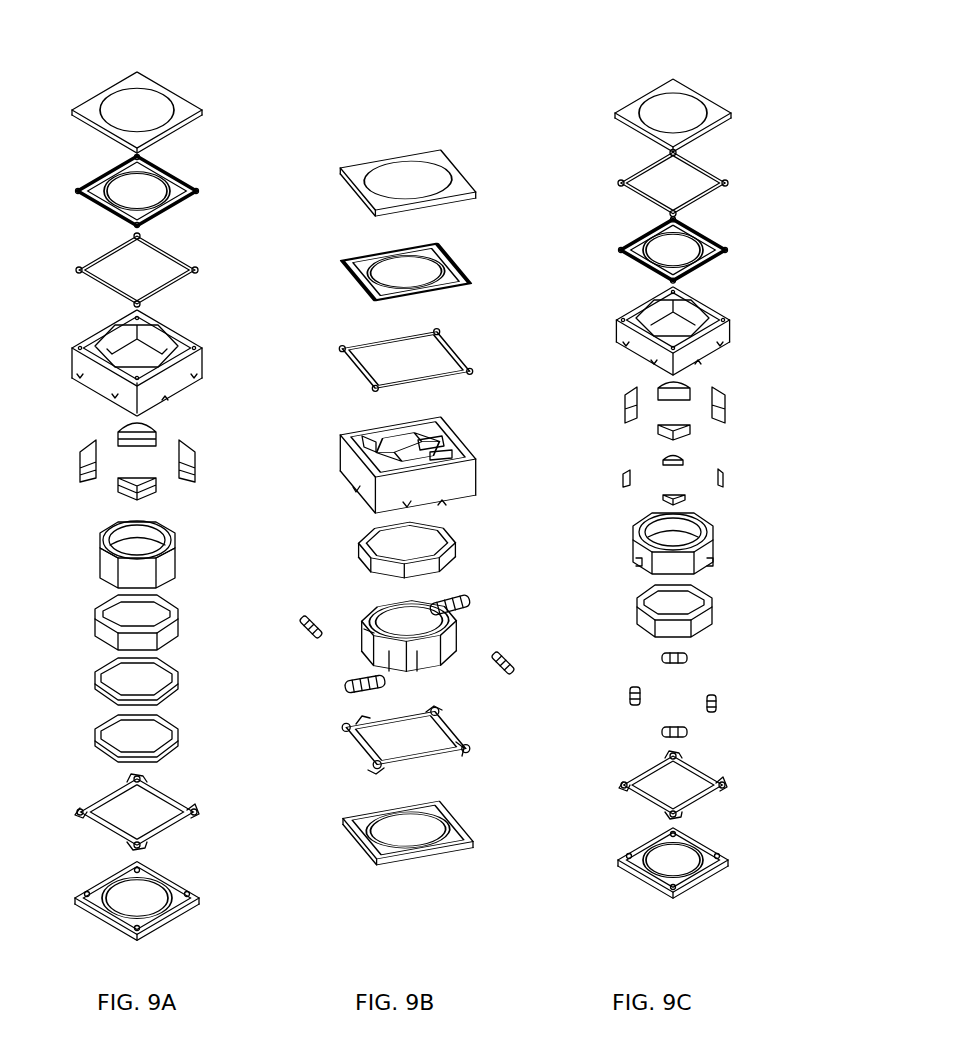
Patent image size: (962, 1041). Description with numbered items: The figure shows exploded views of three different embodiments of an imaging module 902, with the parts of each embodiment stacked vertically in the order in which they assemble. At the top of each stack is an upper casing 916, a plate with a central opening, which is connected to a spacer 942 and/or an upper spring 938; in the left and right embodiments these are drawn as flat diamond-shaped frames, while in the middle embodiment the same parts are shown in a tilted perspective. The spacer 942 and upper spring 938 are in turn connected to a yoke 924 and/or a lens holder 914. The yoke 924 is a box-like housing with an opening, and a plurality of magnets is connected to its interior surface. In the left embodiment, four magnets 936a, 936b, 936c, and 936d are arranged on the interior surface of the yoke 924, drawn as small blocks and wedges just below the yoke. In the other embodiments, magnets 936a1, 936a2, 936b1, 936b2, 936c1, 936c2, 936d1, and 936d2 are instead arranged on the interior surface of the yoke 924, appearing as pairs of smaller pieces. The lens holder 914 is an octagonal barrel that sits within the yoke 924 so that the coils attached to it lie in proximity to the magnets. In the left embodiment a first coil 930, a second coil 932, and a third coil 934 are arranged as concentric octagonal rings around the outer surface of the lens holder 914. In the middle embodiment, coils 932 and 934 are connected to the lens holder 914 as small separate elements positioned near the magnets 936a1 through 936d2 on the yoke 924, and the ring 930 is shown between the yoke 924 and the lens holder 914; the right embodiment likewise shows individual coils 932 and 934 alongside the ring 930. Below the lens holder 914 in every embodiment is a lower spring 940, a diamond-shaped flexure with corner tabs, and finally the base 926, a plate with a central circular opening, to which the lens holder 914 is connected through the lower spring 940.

In FIG. 9A, the imaging module 902 is at (252, 160).
In FIG. 9B, the imaging module 902 is at (480, 150).
In FIG. 9C, the imaging module 902 is at (750, 127).
In FIG. 9A, the lens holder 914 is at (104, 542).
In FIG. 9B, the lens holder 914 is at (370, 620).
In FIG. 9C, the lens holder 914 is at (638, 550).
In FIG. 9A, the upper casing 916 is at (97, 93).
In FIG. 9B, the upper casing 916 is at (432, 157).
In FIG. 9C, the upper casing 916 is at (668, 82).
In FIG. 9A, the yoke 924 is at (74, 364).
In FIG. 9B, the yoke 924 is at (342, 452).
In FIG. 9C, the yoke 924 is at (620, 330).
In FIG. 9A, the base 926 is at (193, 897).
In FIG. 9B, the base 926 is at (393, 854).
In FIG. 9C, the base 926 is at (628, 868).
In FIG. 9A, the first coil 930 is at (178, 628).
In FIG. 9B, the first coil 930 is at (460, 540).
In FIG. 9C, the first coil 930 is at (712, 610).
In FIG. 9A, the second coil 932 is at (178, 690).
In FIG. 9B, the second coil 932 is at (312, 624).
In FIG. 9C, the second coil 932 is at (632, 692).
In FIG. 9A, the third coil 934 is at (178, 742).
In FIG. 9B, the third coil 934 is at (462, 606).
In FIG. 9C, the third coil 934 is at (688, 658).
In FIG. 9A, the magnet 936a is at (111, 446).
In FIG. 9A, the magnet 936b is at (201, 478).
In FIG. 9A, the magnet 936c is at (111, 506).
In FIG. 9A, the magnet 936d is at (74, 484).
In FIG. 9B, the magnet 936a1 is at (440, 443).
In FIG. 9C, the magnet 936a1 is at (660, 386).
In FIG. 9B, the magnet 936a2 is at (452, 456).
In FIG. 9C, the magnet 936a2 is at (665, 458).
In FIG. 9C, the magnet 936b1 is at (725, 397).
In FIG. 9C, the magnet 936b2 is at (723, 476).
In FIG. 9C, the magnet 936c1 is at (626, 402).
In FIG. 9C, the magnet 936c2 is at (624, 478).
In FIG. 9B, the magnet 936d1 is at (368, 440).
In FIG. 9C, the magnet 936d1 is at (692, 436).
In FIG. 9C, the magnet 936d2 is at (686, 500).
In FIG. 9A, the upper spring 938 is at (80, 191).
In FIG. 9B, the upper spring 938 is at (344, 264).
In FIG. 9C, the upper spring 938 is at (622, 251).
In FIG. 9A, the lower spring 940 is at (85, 814).
In FIG. 9B, the lower spring 940 is at (350, 735).
In FIG. 9C, the lower spring 940 is at (630, 788).
In FIG. 9A, the spacer 942 is at (80, 270).
In FIG. 9B, the spacer 942 is at (344, 350).
In FIG. 9C, the spacer 942 is at (622, 184).